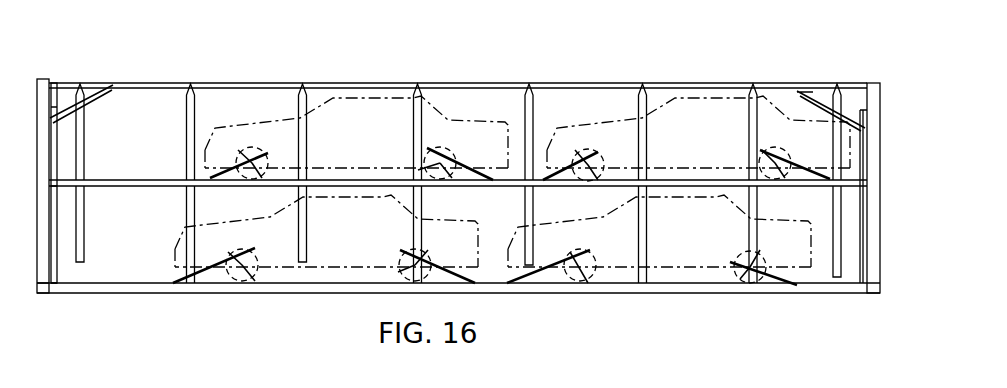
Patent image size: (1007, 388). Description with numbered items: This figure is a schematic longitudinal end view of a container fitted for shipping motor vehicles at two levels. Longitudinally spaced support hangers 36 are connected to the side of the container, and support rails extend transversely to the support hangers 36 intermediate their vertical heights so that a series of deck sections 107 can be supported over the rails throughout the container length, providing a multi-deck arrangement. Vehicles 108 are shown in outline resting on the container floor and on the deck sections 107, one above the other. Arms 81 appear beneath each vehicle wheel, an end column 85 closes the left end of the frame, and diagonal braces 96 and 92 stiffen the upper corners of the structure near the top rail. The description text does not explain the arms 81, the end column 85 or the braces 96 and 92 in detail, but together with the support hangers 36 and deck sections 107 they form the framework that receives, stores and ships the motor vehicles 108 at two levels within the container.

The support hanger 36 is at (190, 106).
The wheel support arm 81 is at (183, 276).
The end column 85 is at (55, 258).
The right diagonal brace 92 is at (843, 113).
The left diagonal brace 96 is at (110, 87).
The deck section 107 is at (115, 174).
The vehicle 108 is at (387, 144).